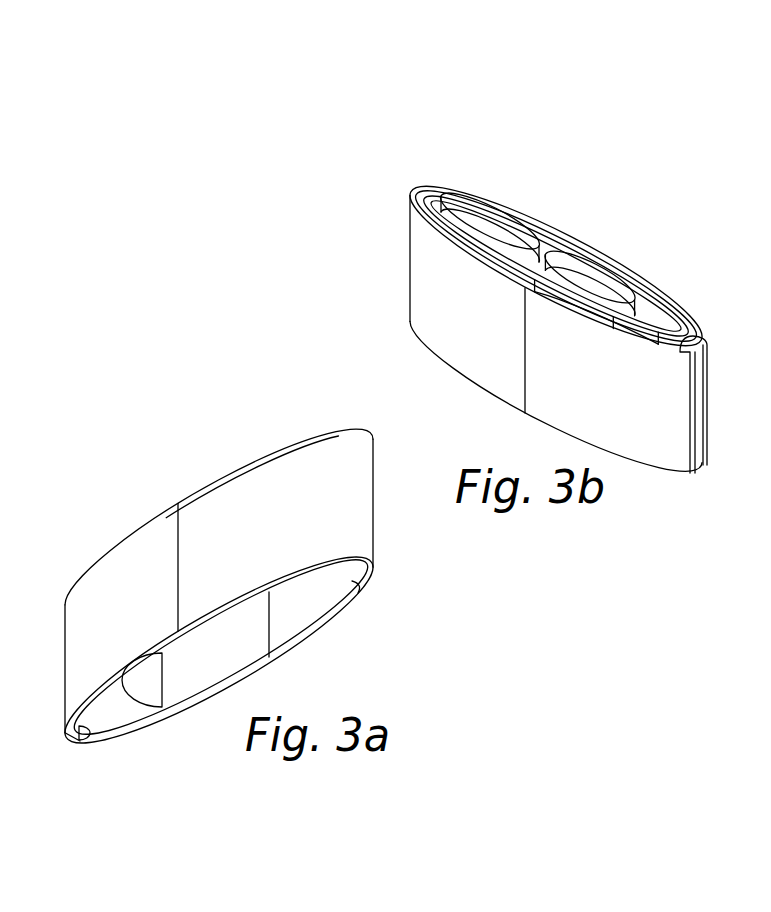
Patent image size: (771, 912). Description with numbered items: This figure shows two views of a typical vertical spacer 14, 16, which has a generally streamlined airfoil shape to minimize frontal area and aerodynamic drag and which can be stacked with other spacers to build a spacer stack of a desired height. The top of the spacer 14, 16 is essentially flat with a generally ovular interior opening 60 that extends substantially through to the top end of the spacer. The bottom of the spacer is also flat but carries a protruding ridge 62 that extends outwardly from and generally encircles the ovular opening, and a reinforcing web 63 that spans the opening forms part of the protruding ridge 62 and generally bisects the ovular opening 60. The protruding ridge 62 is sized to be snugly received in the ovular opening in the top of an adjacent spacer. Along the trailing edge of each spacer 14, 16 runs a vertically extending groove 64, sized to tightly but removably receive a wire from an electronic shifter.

In FIG. 3A, the spacer 14 is at (219, 528).
In FIG. 3B, the spacer 14 is at (546, 272).
In FIG. 3A, the spacer 16 is at (185, 462).
In FIG. 3B, the spacer 16 is at (442, 157).
In FIG. 3A, the ovular interior opening 60 is at (298, 607).
In FIG. 3B, the ovular interior opening 60 is at (556, 266).
In FIG. 3B, the protruding ridge 62 is at (608, 263).
In FIG. 3B, the reinforcing web 63 is at (530, 250).
In FIG. 3A, the vertically extending groove 64 is at (62, 770).
In FIG. 3B, the vertically extending groove 64 is at (717, 502).